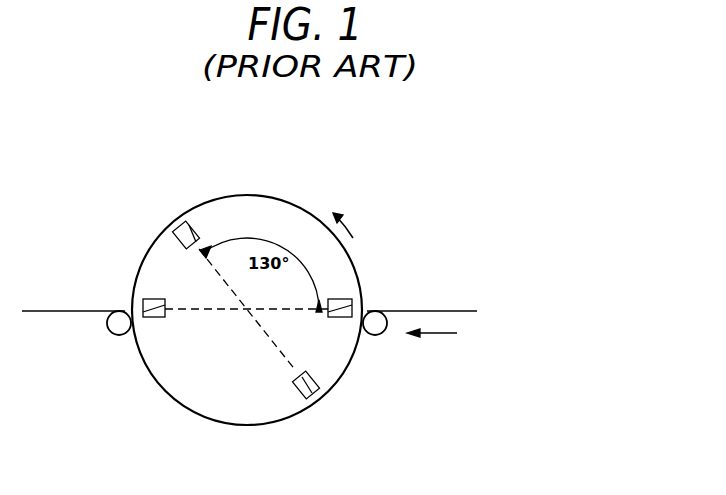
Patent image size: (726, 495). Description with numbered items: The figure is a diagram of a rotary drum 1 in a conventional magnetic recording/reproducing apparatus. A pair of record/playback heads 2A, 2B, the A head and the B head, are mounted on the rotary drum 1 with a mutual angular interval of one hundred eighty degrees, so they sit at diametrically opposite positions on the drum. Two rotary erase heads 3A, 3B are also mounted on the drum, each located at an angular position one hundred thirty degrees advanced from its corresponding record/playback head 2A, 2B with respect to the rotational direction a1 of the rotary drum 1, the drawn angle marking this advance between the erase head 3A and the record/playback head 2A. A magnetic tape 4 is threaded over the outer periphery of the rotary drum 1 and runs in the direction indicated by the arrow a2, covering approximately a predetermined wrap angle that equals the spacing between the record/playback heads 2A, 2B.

The rotary drum 1 is at (277, 210).
The record/playback head 2A is at (343, 298).
The record/playback head 2B is at (157, 318).
The rotary erase head 3A is at (175, 228).
The rotary erase head 3B is at (297, 383).
The magnetic tape 4 is at (423, 311).
The rotational direction a1 is at (348, 227).
The tape running direction a2 is at (435, 337).